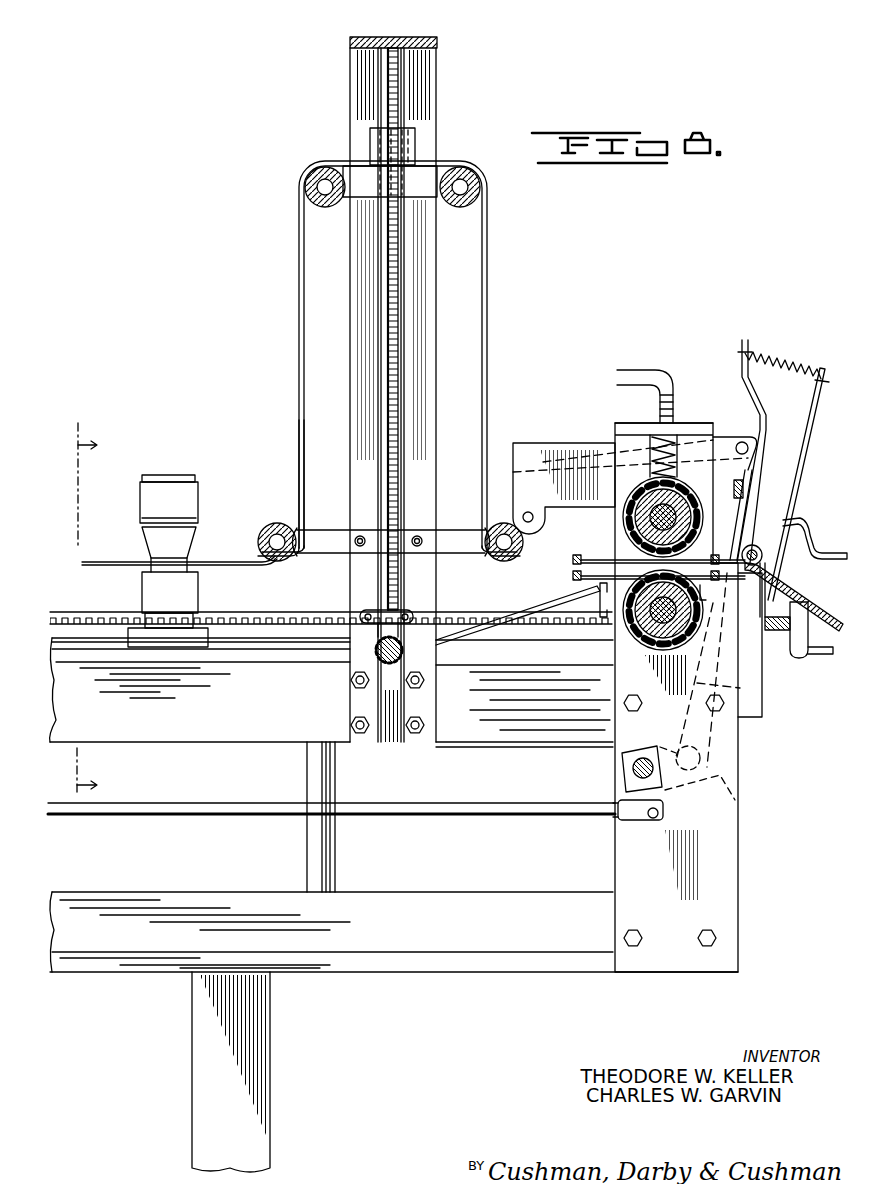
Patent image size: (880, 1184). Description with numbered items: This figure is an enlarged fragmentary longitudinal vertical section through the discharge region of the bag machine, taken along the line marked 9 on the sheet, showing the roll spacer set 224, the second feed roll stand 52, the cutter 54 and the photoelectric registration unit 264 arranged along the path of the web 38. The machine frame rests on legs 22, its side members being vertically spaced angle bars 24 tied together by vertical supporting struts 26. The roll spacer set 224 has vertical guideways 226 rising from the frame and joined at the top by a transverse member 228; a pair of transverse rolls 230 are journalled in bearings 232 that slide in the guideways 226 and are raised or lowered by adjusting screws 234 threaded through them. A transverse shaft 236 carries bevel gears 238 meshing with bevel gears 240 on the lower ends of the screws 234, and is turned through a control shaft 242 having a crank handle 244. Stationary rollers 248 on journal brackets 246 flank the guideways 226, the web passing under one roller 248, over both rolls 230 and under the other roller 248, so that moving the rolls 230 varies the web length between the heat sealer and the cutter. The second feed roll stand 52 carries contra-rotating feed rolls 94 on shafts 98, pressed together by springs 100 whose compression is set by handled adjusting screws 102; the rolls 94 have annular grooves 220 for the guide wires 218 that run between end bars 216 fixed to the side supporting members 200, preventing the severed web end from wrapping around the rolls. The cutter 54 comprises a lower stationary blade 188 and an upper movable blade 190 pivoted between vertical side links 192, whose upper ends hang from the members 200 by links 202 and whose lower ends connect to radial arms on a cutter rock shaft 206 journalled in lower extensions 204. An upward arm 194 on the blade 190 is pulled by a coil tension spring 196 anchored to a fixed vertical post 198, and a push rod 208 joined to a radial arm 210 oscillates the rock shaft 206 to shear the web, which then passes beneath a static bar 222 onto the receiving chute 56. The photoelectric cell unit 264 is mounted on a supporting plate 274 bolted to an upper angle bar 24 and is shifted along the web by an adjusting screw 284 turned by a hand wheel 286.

The section line 9- 9 is at (76, 609).
The leg 22 is at (272, 1078).
The angle bar 24 is at (248, 745).
The vertical supporting strut 26 is at (335, 780).
The web 38 is at (299, 350).
The second feed roll stand 52 is at (612, 385).
The cutter 54 is at (816, 444).
The receiving chute 56 is at (826, 603).
The feed roll 94 is at (628, 620).
The feed roll shaft 98 is at (655, 525).
The spring 100 is at (647, 435).
The adjusting screw 102 is at (642, 370).
The lower stationary blade 188 is at (706, 670).
The upper movable blade 190 is at (740, 517).
The vertical side link 192 is at (742, 688).
The arm 194 is at (742, 397).
The coil tension spring 196 is at (768, 360).
The fixed vertical post 198 is at (800, 465).
The side supporting member 200 is at (614, 436).
The link 202 is at (562, 462).
The lower extension 204 is at (730, 800).
The cutter rock shaft 206 is at (630, 768).
The push rod 208 is at (437, 817).
The radial arm 210 is at (620, 800).
The end bar 216 is at (681, 425).
The guide wire 218 is at (596, 560).
The annular groove 220 is at (625, 519).
The static bar 222 is at (760, 560).
The roll spacer set 224 is at (310, 141).
The vertical guideway 226 is at (437, 122).
The transverse member 228 is at (444, 43).
The transverse roll 230 is at (302, 195).
The bearing 232 is at (418, 146).
The adjusting screw 234 is at (403, 80).
The transverse shaft 236 is at (375, 640).
The bevel gear 238 is at (402, 657).
The bevel gear 240 is at (403, 617).
The control shaft 242 is at (510, 597).
The crank handle 244 is at (805, 530).
The journal bracket 246 is at (300, 524).
The stationary roller 248 is at (270, 522).
The photoelectric cell unit 264 is at (139, 503).
The supporting plate 274 is at (233, 656).
The adjusting screw 284 is at (102, 611).
The hand wheel 286 is at (803, 656).